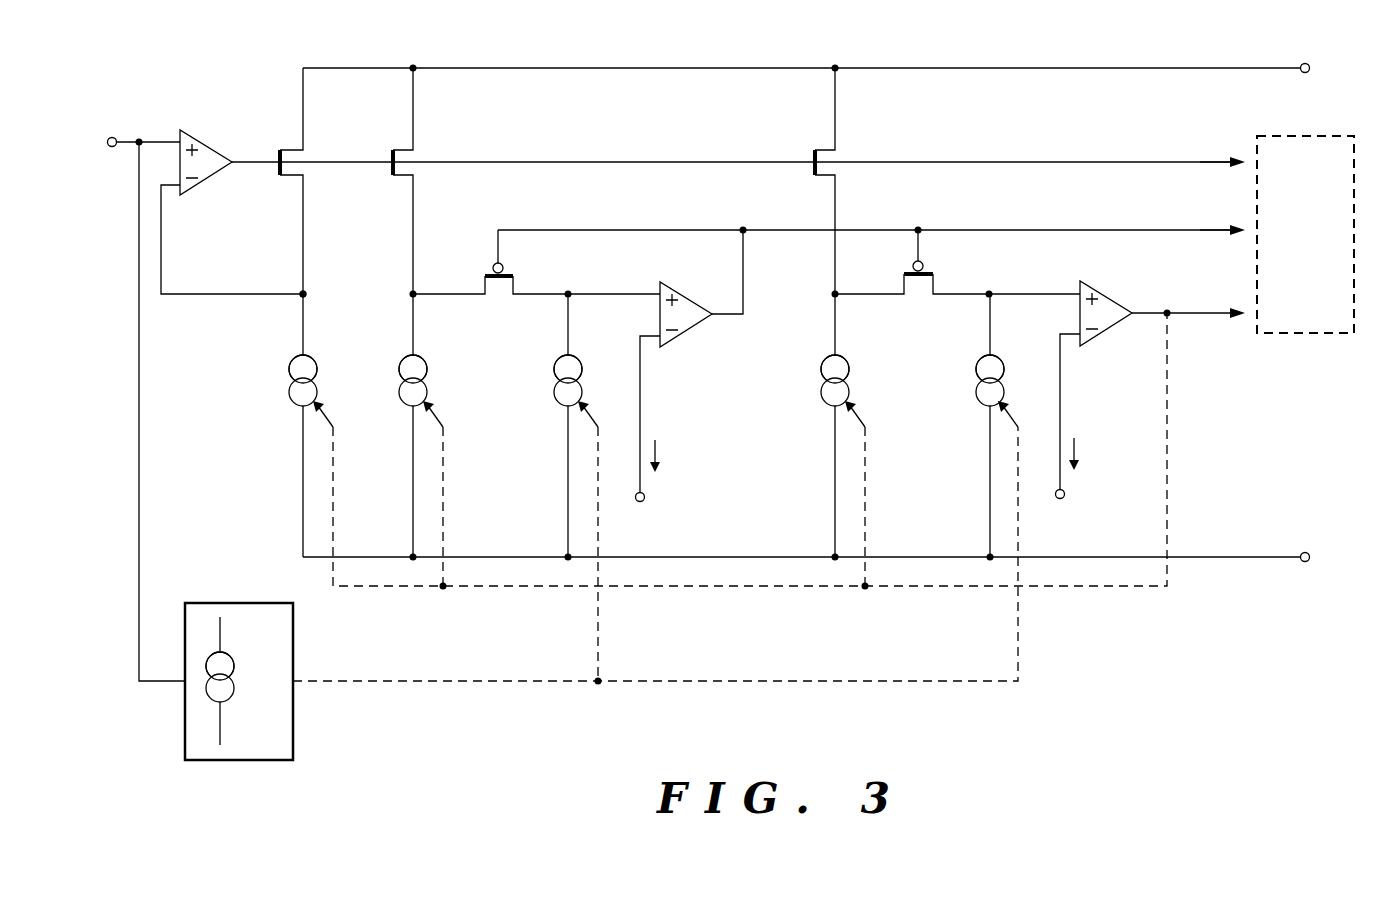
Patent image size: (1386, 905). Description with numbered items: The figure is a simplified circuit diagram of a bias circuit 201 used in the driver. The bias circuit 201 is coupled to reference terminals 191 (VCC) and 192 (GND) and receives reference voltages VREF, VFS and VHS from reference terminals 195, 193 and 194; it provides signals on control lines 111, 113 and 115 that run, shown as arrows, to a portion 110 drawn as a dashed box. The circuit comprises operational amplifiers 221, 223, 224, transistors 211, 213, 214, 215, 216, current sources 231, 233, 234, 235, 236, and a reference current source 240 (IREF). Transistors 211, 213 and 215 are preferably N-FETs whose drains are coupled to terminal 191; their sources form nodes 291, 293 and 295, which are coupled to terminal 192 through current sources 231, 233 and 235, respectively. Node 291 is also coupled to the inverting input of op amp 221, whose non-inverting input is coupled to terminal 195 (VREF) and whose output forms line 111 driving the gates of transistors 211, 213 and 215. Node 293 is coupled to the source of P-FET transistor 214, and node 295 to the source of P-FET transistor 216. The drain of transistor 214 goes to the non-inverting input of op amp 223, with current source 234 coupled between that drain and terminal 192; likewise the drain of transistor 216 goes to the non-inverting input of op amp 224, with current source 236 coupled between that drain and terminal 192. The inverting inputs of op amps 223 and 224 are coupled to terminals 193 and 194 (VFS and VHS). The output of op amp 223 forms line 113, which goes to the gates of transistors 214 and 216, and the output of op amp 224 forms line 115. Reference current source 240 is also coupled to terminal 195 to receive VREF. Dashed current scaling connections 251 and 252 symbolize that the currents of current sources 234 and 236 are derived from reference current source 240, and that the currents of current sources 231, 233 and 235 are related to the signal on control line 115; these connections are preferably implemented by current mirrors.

The portion 110 is at (1290, 250).
The control line 111 is at (1208, 156).
The control line 113 is at (1208, 226).
The control line 115 is at (1208, 309).
The reference terminal 191 is at (1280, 70).
The reference terminal 192 is at (1283, 559).
The reference terminal 193 is at (640, 502).
The reference terminal 194 is at (1060, 499).
The reference terminal 195 is at (112, 137).
The bias circuit 201 is at (588, 806).
The transistor 211 is at (308, 146).
The transistor 213 is at (422, 146).
The transistor 214 is at (518, 280).
The transistor 215 is at (840, 146).
The transistor 216 is at (940, 280).
The operational amplifier 221 is at (206, 144).
The operational amplifier 223 is at (686, 293).
The operational amplifier 224 is at (1108, 293).
The current source 231 is at (318, 363).
The current source 233 is at (428, 363).
The current source 234 is at (554, 393).
The current source 235 is at (850, 363).
The current source 236 is at (976, 393).
The reference current source 240 is at (212, 603).
The current scaling connection 251 is at (850, 683).
The current scaling connection 252 is at (772, 590).
The node 291 is at (308, 295).
The node 293 is at (410, 296).
The node 295 is at (830, 296).